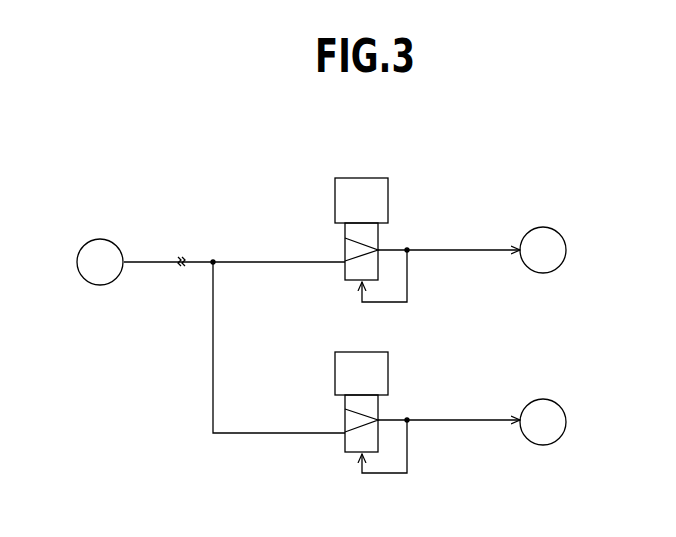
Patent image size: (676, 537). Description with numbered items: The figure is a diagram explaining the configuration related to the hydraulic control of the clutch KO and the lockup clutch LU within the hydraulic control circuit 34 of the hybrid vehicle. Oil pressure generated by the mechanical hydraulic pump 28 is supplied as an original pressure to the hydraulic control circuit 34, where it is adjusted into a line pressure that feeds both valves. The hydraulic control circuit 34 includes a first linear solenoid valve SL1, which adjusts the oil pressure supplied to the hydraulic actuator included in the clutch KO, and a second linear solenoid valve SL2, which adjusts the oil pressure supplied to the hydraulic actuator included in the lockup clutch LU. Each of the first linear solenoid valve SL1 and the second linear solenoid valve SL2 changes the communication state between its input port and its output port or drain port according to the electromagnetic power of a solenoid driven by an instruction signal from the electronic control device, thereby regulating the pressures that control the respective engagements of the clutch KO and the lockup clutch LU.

The hydraulic control circuit 34 is at (183, 128).
The hydraulic pump 28 is at (100, 245).
The first linear solenoid valve SL1 is at (360, 183).
The second linear solenoid valve SL2 is at (360, 356).
The clutch KO is at (543, 233).
The lockup clutch LU is at (543, 406).